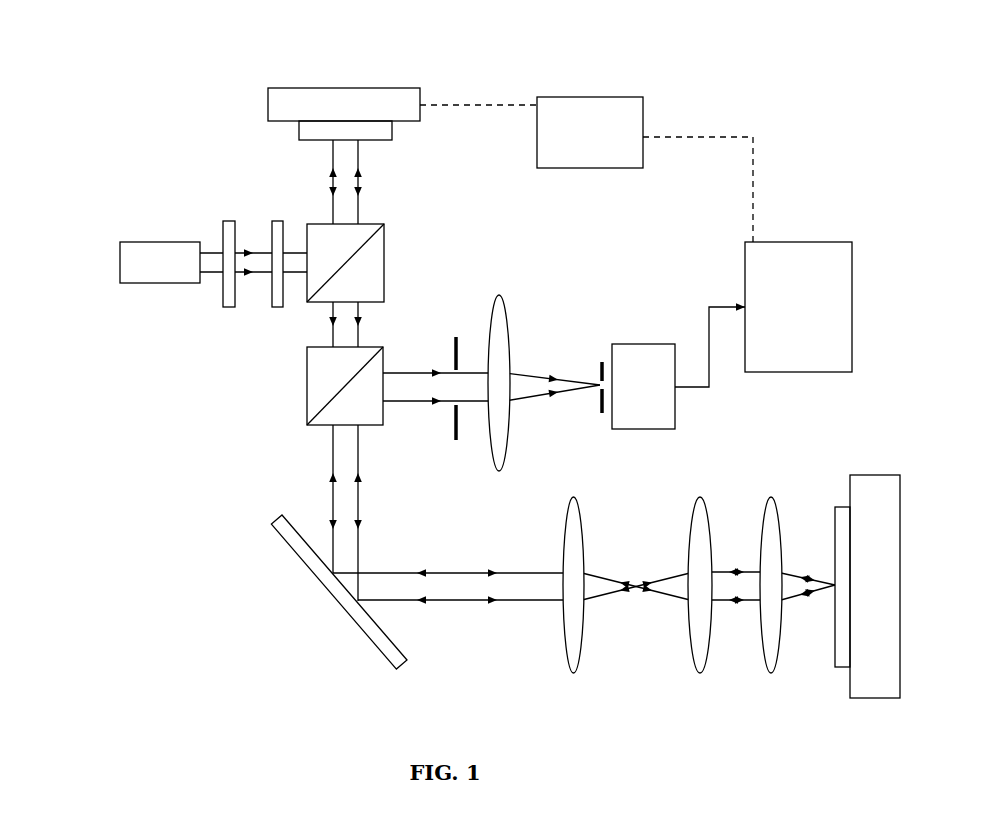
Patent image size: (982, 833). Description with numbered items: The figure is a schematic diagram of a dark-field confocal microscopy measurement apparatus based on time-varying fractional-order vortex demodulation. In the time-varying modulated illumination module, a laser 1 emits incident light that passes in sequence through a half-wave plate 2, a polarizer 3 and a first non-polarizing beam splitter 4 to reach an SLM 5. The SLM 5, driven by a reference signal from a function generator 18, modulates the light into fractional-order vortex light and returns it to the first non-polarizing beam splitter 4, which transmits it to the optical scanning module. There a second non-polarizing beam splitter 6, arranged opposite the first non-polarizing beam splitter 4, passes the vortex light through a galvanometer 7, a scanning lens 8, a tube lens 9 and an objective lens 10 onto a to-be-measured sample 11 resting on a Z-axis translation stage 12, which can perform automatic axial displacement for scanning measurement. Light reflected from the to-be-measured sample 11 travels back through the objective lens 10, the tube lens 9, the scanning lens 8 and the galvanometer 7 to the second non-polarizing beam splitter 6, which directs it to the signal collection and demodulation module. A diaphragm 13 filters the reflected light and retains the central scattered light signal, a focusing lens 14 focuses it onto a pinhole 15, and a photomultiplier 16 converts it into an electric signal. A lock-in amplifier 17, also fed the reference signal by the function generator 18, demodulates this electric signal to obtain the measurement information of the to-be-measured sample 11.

The laser 1 is at (123, 227).
The half-wave plate 2 is at (173, 233).
The polarizer 3 is at (219, 220).
The first non-polarizing beam splitter 4 is at (301, 206).
The SLM 5 is at (316, 77).
The second non-polarizing beam splitter 6 is at (299, 373).
The galvanometer 7 is at (285, 558).
The scanning lens 8 is at (518, 579).
The tube lens 9 is at (646, 570).
The objective lens 10 is at (717, 562).
The to-be-measured sample 11 is at (791, 552).
The Z-axis translation stage 12 is at (832, 551).
The diaphragm 13 is at (508, 320).
The focusing lens 14 is at (545, 363).
The pinhole 15 is at (652, 303).
The photomultiplier 16 is at (676, 344).
The lock-in amplifier 17 is at (805, 260).
The function generator 18 is at (616, 89).